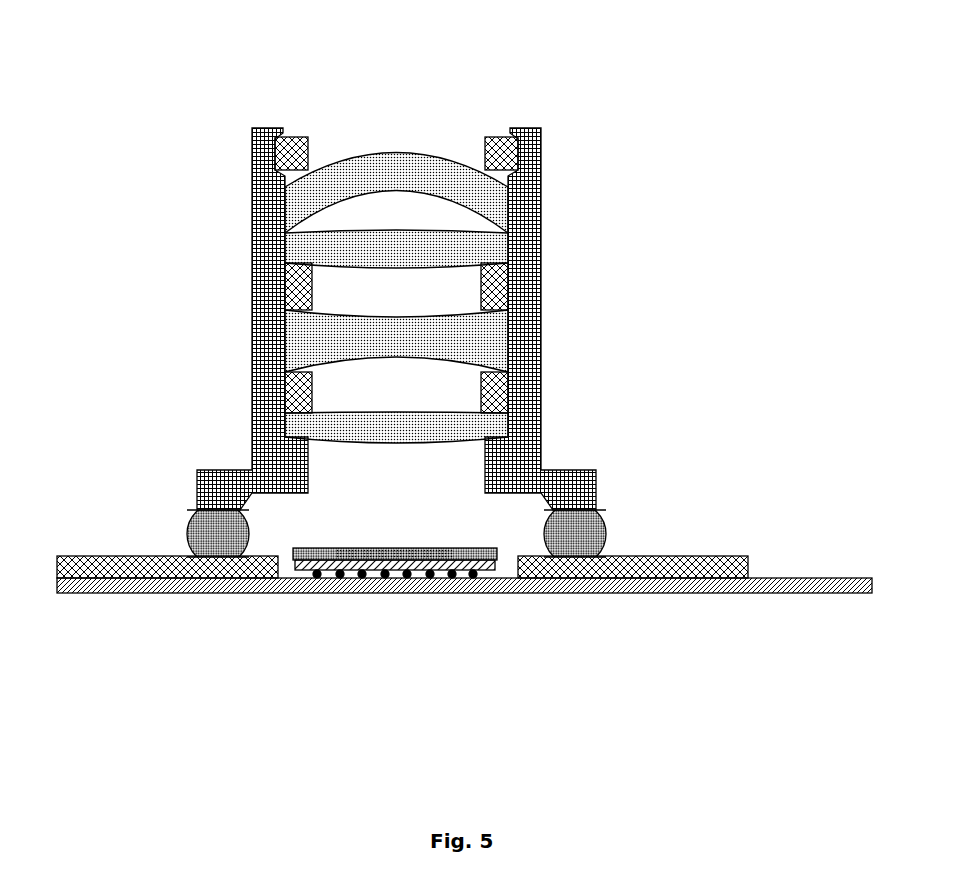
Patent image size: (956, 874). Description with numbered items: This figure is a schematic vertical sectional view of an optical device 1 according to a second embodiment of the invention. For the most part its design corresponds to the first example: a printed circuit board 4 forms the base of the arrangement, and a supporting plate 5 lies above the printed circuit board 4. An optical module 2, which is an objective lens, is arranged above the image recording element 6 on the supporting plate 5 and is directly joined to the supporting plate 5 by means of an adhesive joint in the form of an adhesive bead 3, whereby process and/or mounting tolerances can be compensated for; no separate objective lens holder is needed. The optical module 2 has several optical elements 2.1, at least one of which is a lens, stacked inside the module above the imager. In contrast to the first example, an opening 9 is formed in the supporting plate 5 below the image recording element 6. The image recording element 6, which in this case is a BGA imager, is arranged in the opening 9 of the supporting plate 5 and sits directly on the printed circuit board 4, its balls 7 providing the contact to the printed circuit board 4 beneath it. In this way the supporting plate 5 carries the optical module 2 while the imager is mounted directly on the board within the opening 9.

The optical device 1 is at (135, 86).
The optical module 2 is at (262, 177).
The optical element 2.1 is at (445, 428).
The adhesive bead 3 is at (214, 522).
The printed circuit board 4 is at (263, 583).
The supporting plate 5 is at (148, 563).
The image recording element 6 is at (445, 553).
The balls 7 is at (507, 572).
The opening 9 is at (283, 603).